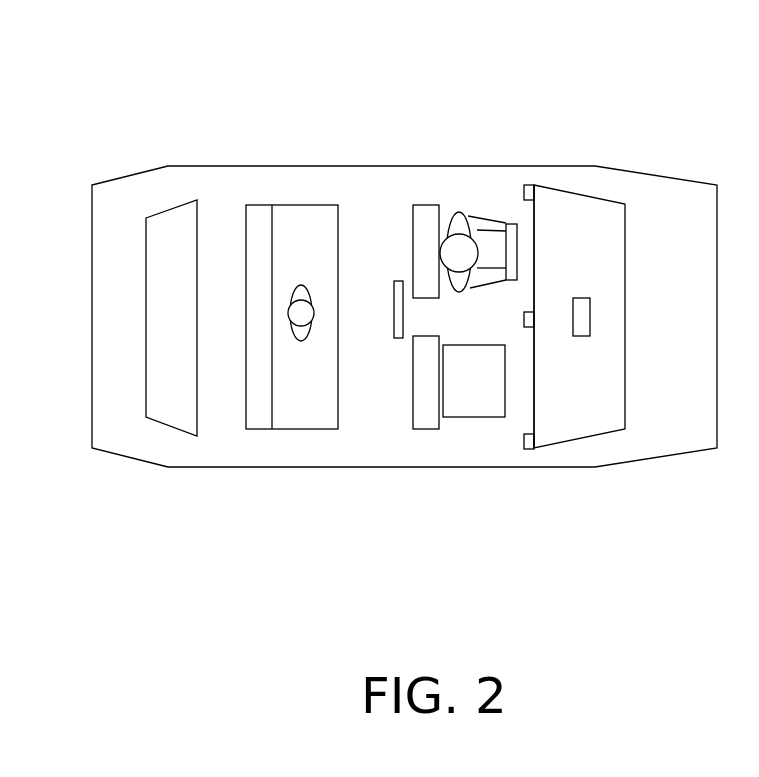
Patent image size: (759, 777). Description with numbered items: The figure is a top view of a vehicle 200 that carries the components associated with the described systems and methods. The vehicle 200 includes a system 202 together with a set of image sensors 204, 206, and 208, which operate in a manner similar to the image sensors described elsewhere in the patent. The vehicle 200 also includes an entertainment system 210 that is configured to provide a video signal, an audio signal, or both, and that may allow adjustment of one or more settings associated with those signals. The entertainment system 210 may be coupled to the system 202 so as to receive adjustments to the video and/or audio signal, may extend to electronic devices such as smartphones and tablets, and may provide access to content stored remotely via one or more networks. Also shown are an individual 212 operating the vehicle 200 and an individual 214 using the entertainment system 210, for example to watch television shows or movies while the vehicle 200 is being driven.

The vehicle 200 is at (537, 80).
The system 202 is at (587, 337).
The image sensor 204 is at (525, 440).
The image sensor 206 is at (525, 317).
The image sensor 208 is at (525, 192).
The entertainment system 210 is at (393, 287).
The individual 212 is at (502, 283).
The individual 214 is at (313, 324).